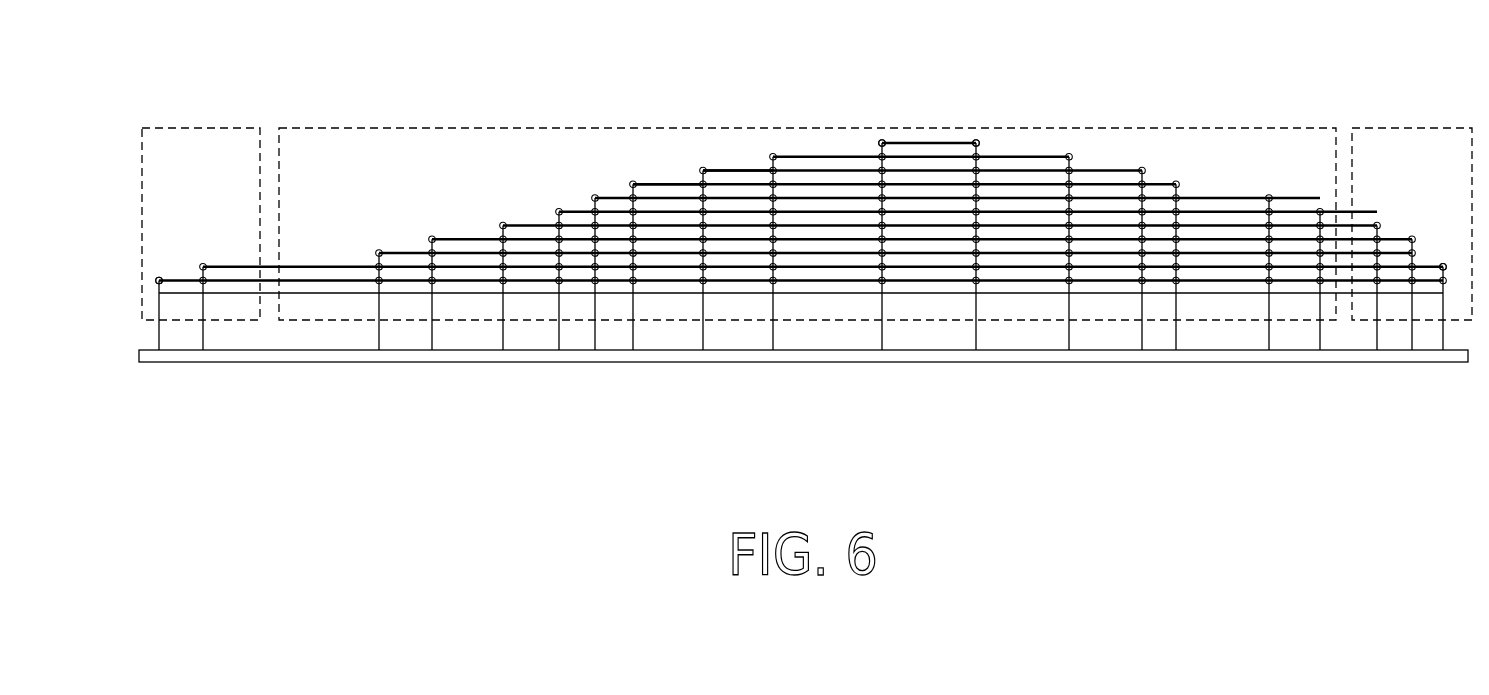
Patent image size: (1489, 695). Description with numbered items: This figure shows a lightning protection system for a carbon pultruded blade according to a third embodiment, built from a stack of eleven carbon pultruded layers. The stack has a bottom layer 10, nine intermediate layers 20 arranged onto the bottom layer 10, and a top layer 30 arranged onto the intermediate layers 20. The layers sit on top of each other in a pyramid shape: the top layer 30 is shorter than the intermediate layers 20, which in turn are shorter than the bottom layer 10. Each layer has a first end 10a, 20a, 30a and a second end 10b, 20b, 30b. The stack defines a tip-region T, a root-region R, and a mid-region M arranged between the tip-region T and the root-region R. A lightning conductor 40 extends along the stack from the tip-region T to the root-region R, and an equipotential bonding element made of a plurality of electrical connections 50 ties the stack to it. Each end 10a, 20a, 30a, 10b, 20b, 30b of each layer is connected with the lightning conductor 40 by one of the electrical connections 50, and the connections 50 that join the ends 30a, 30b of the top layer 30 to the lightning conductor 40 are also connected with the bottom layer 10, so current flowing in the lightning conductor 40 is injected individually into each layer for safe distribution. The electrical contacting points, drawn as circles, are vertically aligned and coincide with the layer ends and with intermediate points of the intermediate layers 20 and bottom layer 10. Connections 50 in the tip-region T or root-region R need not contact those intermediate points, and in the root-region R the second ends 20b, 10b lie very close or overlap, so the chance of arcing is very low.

The bottom layer 10 is at (248, 288).
The first end of bottom layer 10a is at (159, 282).
The second end of bottom layer 10b is at (1443, 267).
The intermediate layers 20 is at (530, 228).
The first ends of intermediate layers 20a is at (773, 157).
The second ends of intermediate layers 20b is at (1377, 226).
The top layer 30 is at (916, 150).
The first end of top layer 30a is at (882, 143).
The second end of top layer 30b is at (976, 143).
The lightning conductor 40 is at (297, 353).
The electrical connections 50 is at (1444, 284).
The tip-region T is at (200, 111).
The mid-region M is at (628, 110).
The root-region R is at (1405, 106).